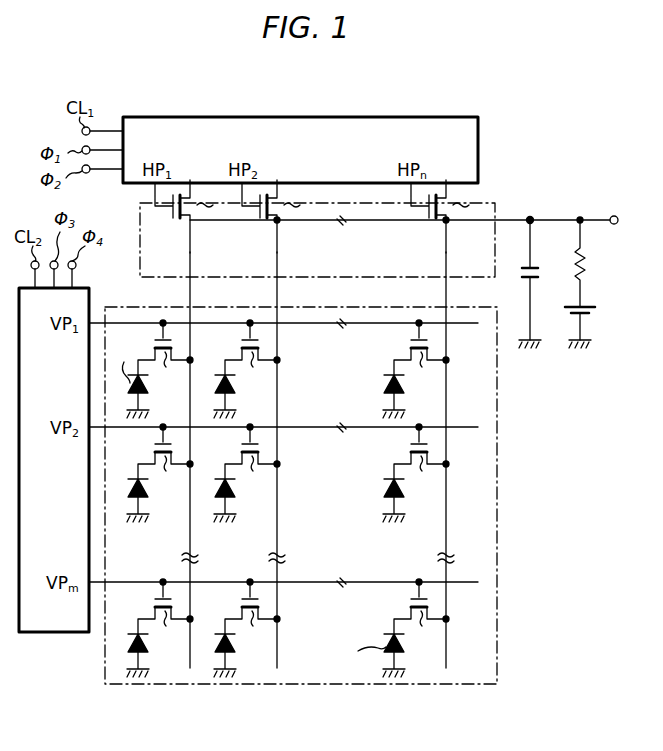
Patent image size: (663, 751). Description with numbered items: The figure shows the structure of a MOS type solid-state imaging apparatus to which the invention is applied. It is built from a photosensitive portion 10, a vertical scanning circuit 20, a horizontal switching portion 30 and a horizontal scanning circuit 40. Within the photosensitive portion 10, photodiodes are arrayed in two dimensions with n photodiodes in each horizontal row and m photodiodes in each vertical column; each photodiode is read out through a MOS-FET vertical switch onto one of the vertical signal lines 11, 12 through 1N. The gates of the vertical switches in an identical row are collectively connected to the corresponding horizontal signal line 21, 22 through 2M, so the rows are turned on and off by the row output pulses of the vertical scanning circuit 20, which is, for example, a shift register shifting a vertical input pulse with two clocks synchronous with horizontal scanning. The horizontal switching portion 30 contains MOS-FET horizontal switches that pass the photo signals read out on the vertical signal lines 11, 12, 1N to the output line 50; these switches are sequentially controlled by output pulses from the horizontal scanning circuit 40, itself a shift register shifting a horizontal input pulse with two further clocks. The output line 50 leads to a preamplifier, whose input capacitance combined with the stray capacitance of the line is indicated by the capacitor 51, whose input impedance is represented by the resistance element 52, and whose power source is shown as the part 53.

The photosensitive portion 10 is at (295, 686).
The vertical signal line 11 is at (190, 531).
The vertical signal line 12 is at (277, 510).
The vertical signal line 1N is at (446, 505).
The vertical scanning circuit 20 is at (55, 633).
The horizontal signal line 21 is at (309, 324).
The horizontal signal line 22 is at (307, 428).
The horizontal signal line 2M is at (305, 583).
The horizontal switching portion 30 is at (493, 203).
The horizontal scanning circuit 40 is at (362, 117).
The output line 50 is at (531, 218).
The capacitor 51 is at (535, 268).
The resistance element 52 is at (588, 270).
The power source 53 is at (586, 307).